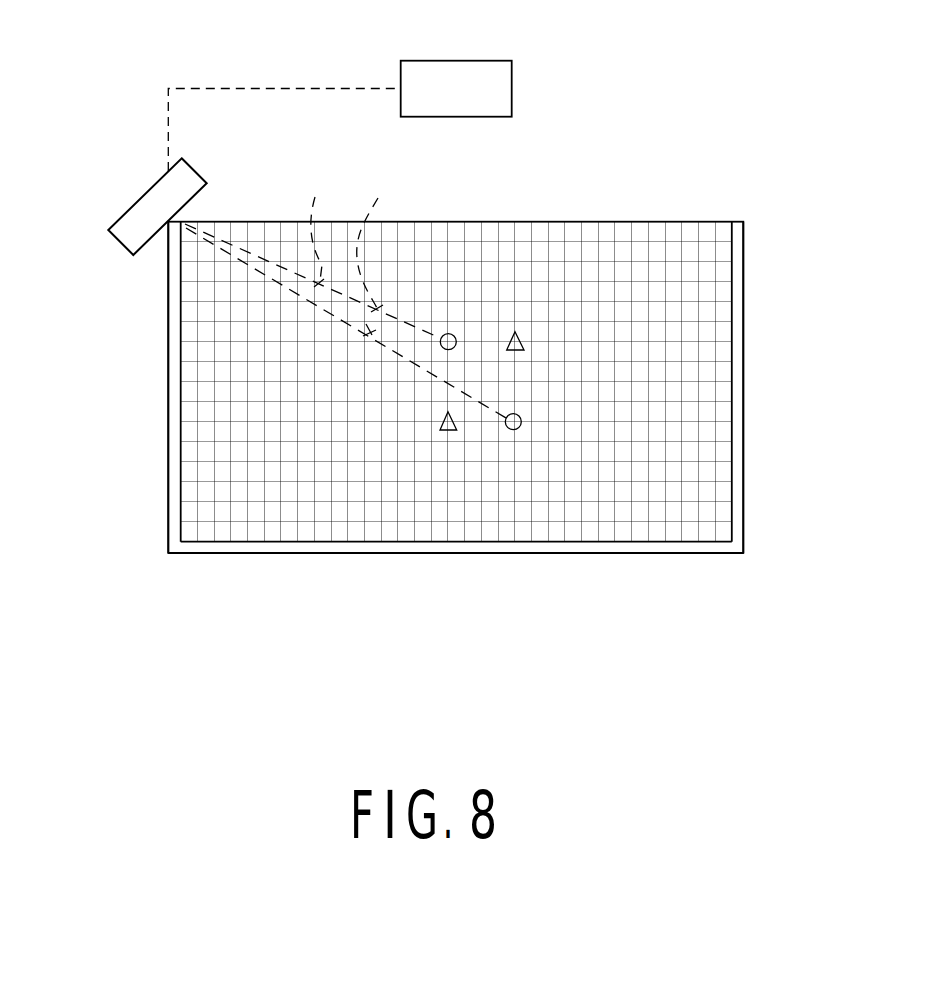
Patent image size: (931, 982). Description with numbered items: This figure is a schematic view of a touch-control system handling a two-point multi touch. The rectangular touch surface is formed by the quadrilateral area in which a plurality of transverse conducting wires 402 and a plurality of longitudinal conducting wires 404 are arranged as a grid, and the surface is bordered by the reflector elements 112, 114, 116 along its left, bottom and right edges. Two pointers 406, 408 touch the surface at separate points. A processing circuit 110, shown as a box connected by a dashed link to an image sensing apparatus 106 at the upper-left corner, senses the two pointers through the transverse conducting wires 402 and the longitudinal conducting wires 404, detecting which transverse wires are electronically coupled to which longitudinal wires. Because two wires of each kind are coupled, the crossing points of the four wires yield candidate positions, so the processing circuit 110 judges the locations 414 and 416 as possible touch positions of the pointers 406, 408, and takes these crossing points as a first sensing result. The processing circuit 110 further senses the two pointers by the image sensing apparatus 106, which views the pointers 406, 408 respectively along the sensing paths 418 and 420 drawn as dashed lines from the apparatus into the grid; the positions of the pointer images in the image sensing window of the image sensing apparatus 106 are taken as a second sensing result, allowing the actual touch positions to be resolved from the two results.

The image sensing apparatus 106 is at (119, 242).
The processing circuit 110 is at (453, 60).
The reflector element 112 is at (172, 382).
The reflector element 114 is at (205, 545).
The reflector element 116 is at (737, 418).
The transverse conducting wires 402 is at (707, 502).
The longitudinal conducting wires 404 is at (698, 475).
The pointer 406 is at (448, 333).
The pointer 408 is at (513, 430).
The possible touch position 414 is at (515, 331).
The possible touch position 416 is at (447, 430).
The sensing path 418 is at (316, 228).
The sensing path 420 is at (378, 254).